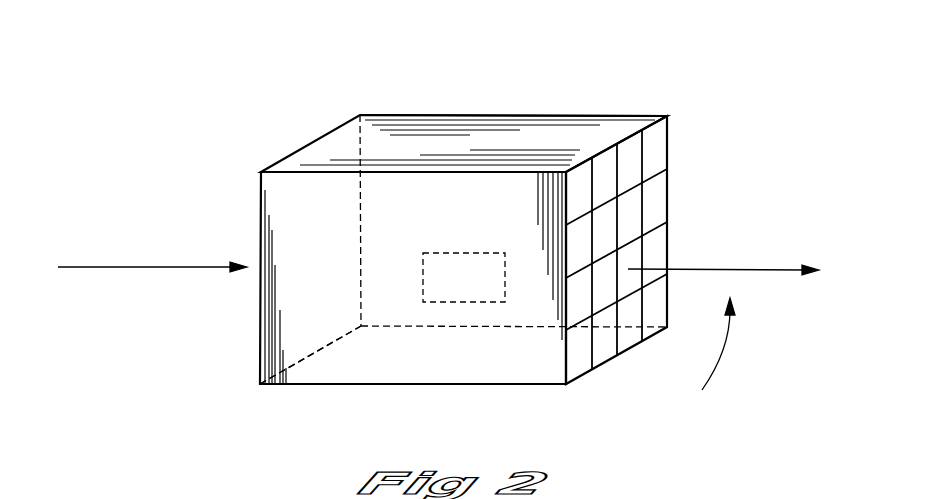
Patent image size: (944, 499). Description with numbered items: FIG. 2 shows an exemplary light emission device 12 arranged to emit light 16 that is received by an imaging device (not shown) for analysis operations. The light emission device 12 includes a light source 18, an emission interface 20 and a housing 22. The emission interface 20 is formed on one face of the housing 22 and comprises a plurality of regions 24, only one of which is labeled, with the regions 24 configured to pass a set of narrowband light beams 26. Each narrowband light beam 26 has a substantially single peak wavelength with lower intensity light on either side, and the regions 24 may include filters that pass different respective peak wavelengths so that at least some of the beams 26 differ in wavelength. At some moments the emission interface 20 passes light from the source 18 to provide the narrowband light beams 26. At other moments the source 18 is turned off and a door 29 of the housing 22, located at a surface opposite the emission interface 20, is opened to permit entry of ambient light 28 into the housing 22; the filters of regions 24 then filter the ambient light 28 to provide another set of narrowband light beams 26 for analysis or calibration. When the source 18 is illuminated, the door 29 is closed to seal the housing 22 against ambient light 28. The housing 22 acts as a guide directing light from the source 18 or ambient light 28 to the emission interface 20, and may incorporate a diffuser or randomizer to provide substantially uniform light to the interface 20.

The light emission device 12 is at (240, 137).
The light 16 is at (701, 358).
The light source 18 is at (461, 302).
The emission interface 20 is at (623, 135).
The housing 22 is at (483, 138).
The region 24 is at (657, 205).
The narrowband light beam 26 is at (767, 272).
The ambient light 28 is at (153, 267).
The door 29 is at (319, 347).